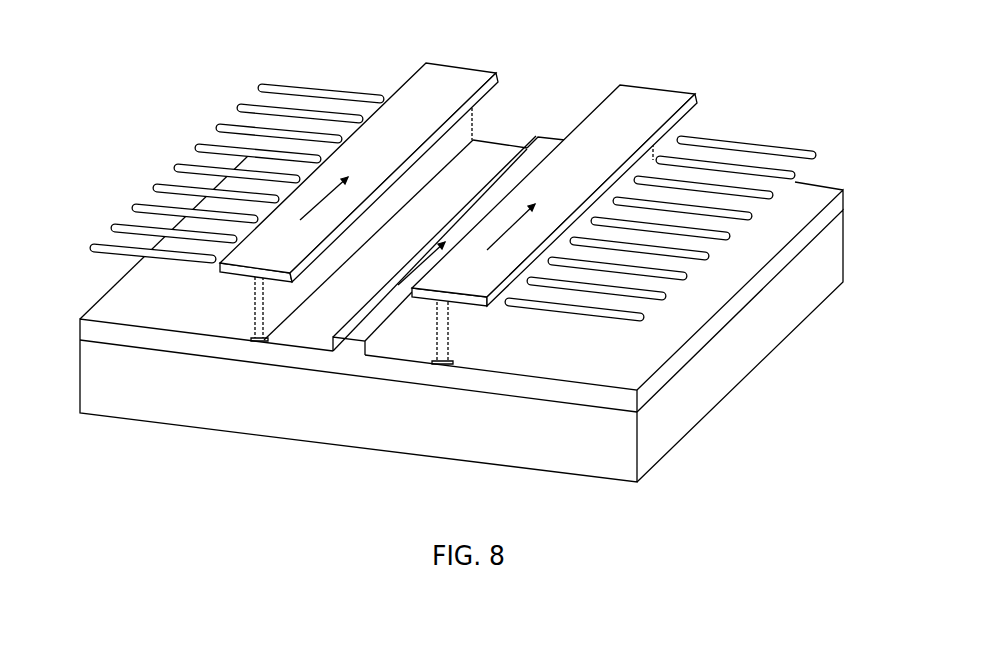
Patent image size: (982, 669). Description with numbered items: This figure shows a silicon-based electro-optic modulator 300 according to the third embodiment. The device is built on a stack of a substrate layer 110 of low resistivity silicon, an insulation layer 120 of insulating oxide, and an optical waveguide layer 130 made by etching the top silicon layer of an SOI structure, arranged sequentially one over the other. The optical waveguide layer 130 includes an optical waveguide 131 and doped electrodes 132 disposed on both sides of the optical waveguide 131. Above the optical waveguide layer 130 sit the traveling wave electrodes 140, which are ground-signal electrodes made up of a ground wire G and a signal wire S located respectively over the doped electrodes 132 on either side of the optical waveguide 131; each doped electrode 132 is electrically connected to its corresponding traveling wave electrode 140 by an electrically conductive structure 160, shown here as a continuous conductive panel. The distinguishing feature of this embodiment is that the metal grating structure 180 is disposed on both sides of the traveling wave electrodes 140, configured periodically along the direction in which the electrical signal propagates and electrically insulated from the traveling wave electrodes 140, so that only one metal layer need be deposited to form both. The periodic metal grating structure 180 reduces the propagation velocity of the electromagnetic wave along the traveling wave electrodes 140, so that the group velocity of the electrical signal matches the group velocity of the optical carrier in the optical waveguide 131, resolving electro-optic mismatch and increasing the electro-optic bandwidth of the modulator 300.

The silicon-based electro-optic modulator 300 is at (60, 46).
The substrate layer 110 is at (811, 277).
The insulation layer 120 is at (735, 308).
The optical waveguide layer 130 is at (399, 322).
The optical waveguide 131 is at (343, 338).
The doped electrodes 132 is at (268, 341).
The traveling wave electrodes 140 is at (238, 272).
The electrically conductive structures 160 is at (446, 340).
The metal grating structure 180 is at (150, 262).